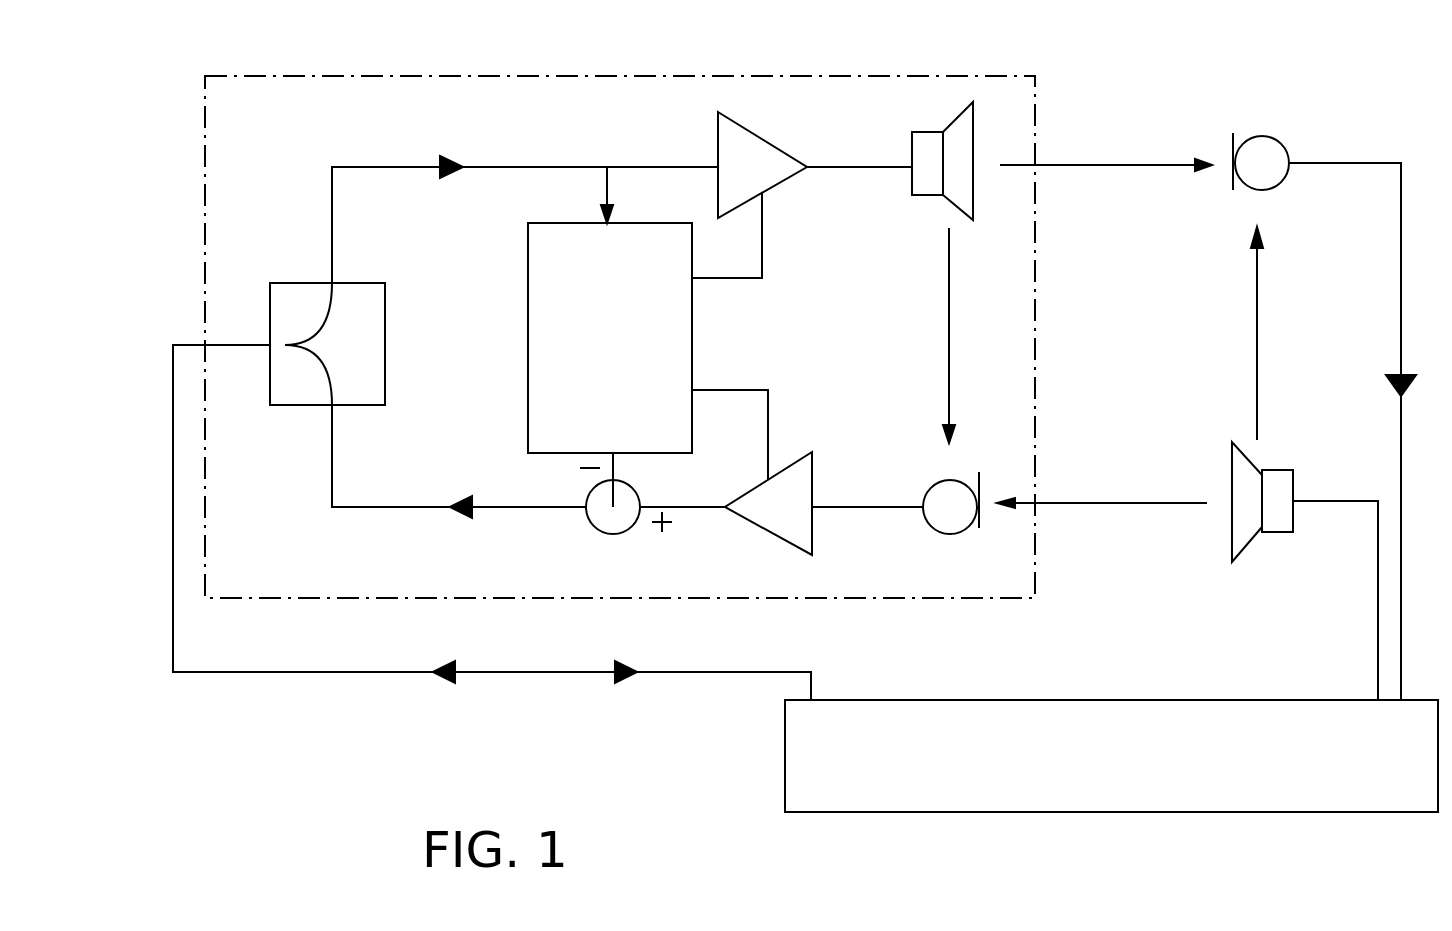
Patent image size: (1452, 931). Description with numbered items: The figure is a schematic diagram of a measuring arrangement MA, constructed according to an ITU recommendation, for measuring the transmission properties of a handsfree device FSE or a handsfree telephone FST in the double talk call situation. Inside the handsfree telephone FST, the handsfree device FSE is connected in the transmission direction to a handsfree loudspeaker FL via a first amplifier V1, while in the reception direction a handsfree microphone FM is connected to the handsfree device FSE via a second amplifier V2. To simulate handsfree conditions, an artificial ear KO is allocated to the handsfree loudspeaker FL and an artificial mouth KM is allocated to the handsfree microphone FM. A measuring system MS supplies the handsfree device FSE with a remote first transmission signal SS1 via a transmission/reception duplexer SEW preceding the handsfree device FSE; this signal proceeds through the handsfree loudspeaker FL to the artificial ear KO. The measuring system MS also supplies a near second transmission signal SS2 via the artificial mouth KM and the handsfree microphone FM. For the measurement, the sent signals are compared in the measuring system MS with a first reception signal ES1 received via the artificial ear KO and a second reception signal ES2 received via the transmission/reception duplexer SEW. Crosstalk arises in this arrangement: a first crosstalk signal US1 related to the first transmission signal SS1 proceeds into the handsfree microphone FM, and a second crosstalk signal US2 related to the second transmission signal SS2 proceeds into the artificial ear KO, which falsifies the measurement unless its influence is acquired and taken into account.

The handsfree telephone FST is at (571, 571).
The measuring arrangement MA is at (285, 733).
The transmission/reception duplexer SEW is at (372, 336).
The handsfree device FSE is at (528, 414).
The first amplifier V1 is at (768, 178).
The handsfree loudspeaker FL is at (925, 195).
The first crosstalk signal US1 is at (949, 356).
The handsfree microphone FM is at (938, 513).
The second amplifier V2 is at (795, 468).
The second reception signal ES2 is at (462, 518).
The first transmission signal SS1 is at (457, 156).
The artificial ear KO is at (1268, 150).
The first reception signal ES1 is at (1398, 372).
The second crosstalk signal US2 is at (1257, 358).
The artificial mouth KM is at (1273, 481).
The second transmission signal SS2 is at (1102, 527).
The measuring system MS is at (997, 718).